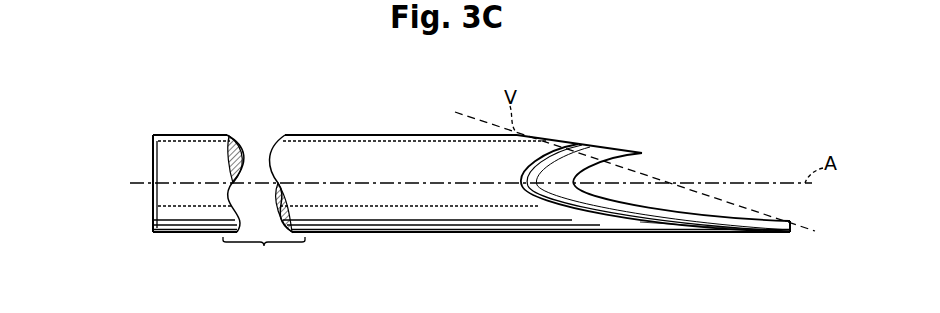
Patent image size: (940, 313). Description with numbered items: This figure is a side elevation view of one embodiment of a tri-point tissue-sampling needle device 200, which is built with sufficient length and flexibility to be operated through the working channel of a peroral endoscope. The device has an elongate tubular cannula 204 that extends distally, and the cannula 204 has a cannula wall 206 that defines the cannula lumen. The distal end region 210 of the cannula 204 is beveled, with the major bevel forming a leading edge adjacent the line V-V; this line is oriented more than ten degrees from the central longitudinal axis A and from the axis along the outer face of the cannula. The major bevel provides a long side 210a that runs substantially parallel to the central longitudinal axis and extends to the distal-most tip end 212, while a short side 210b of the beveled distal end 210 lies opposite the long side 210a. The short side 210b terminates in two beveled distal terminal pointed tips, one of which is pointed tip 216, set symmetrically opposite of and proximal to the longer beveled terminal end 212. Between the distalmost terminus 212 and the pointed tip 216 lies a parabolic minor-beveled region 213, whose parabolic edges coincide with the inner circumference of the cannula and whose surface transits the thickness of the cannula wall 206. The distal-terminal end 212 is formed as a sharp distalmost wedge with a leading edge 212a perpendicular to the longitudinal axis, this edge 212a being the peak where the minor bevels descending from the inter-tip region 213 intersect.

The tri-point tissue-sampling needle device 200 is at (152, 126).
The elongate tubular cannula 204 is at (190, 215).
The cannula wall 206 is at (205, 151).
The distal end region 210 is at (730, 162).
The long side 210a is at (706, 240).
The short side 210b is at (600, 135).
The distal-most tip end 212 is at (793, 230).
The distal-terminal edge 212a is at (794, 222).
The parabolic minor-beveled region 213 is at (565, 197).
The beveled distal terminal pointed tip 216 is at (642, 153).